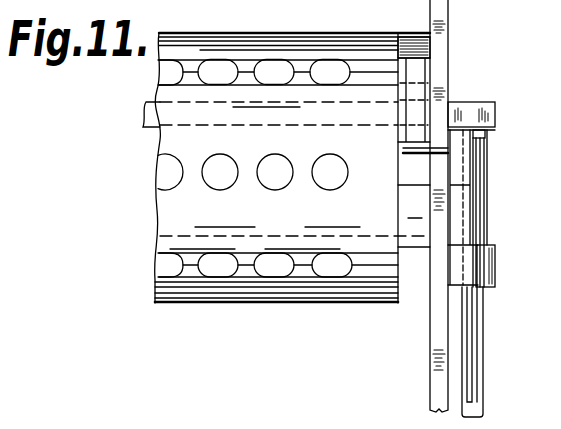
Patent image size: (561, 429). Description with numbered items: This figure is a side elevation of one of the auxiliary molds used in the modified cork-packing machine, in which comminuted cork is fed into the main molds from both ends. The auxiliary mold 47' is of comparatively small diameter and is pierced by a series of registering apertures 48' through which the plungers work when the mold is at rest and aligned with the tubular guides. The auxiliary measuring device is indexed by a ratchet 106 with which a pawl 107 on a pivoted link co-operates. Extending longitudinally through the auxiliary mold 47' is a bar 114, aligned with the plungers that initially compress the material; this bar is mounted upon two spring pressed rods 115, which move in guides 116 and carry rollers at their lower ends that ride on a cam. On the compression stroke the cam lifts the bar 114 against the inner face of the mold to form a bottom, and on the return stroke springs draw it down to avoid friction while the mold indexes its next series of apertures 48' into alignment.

The auxiliary mold 47' is at (294, 30).
The registering apertures 48' is at (278, 47).
The ratchet 106 is at (417, 55).
The pawl 107 is at (415, 72).
The bar 114 is at (476, 103).
The spring pressed rods 115 is at (486, 196).
The guides 116 is at (487, 237).